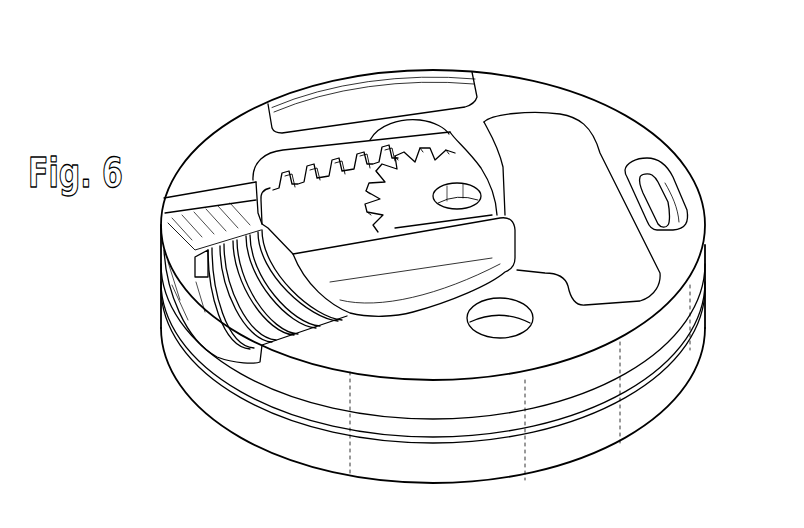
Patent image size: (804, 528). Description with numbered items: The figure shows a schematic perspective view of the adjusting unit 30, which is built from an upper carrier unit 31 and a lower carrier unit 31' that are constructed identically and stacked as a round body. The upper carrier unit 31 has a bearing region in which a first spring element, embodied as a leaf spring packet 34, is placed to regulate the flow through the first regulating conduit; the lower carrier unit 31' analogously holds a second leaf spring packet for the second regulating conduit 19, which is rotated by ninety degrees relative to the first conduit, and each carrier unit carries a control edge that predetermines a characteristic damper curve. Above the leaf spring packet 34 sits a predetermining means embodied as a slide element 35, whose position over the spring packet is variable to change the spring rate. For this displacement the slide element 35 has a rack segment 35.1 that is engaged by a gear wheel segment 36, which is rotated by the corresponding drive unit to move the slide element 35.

The adjusting unit 30 is at (579, 72).
The upper carrier unit 31 is at (459, 353).
The lower carrier unit 31' is at (463, 384).
The second regulating conduit 19 is at (373, 107).
The leaf spring packet 34 is at (208, 273).
The slide element 35 is at (318, 217).
The rack segment 35.1 is at (290, 167).
The gear wheel segment 36 is at (439, 175).